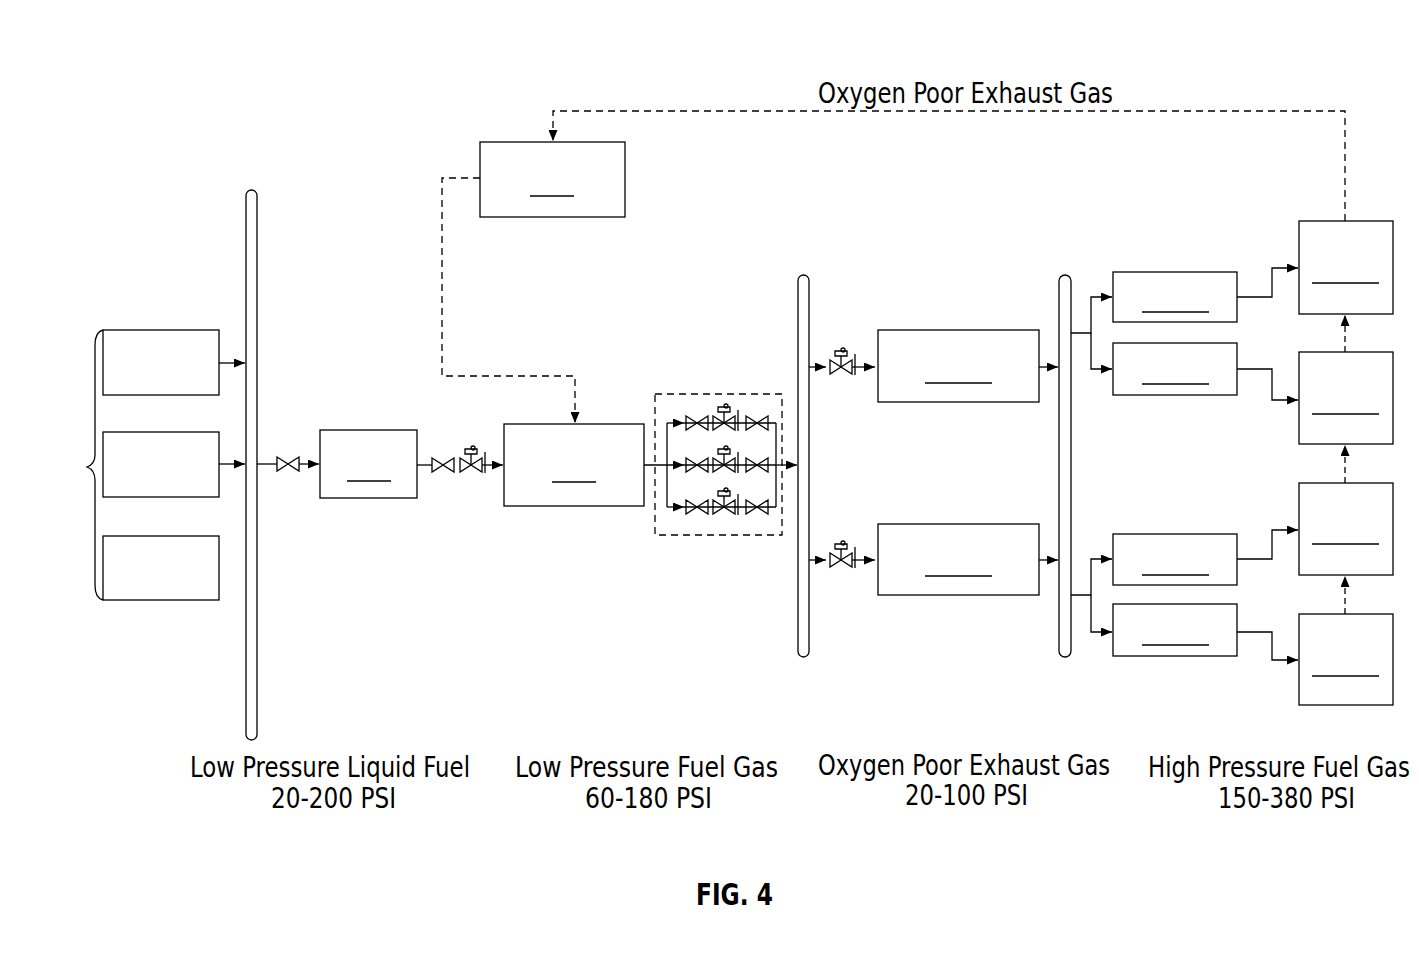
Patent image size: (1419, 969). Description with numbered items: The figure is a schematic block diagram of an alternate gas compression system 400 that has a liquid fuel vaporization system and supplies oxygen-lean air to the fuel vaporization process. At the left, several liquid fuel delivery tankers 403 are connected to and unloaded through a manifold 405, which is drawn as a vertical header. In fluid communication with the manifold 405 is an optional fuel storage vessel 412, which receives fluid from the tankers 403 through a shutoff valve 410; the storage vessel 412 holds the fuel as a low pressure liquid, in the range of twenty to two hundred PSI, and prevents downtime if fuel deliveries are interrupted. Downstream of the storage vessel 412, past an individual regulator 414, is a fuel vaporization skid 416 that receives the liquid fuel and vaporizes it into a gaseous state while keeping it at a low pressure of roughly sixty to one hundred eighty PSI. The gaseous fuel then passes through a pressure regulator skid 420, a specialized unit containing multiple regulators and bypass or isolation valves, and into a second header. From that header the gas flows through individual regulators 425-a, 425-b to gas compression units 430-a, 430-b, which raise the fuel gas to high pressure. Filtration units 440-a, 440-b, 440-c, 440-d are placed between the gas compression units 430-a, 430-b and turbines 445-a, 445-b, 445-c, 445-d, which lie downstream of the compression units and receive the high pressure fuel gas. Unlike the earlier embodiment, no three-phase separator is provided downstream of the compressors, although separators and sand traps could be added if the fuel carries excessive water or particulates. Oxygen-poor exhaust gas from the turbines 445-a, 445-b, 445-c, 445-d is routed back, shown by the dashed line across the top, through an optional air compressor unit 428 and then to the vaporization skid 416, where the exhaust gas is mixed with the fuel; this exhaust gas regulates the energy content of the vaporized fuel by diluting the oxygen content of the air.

The gas compression system 400 is at (152, 72).
The liquid fuel delivery tankers 403 is at (142, 465).
The manifold 405 is at (250, 222).
The shutoff valve 410 is at (282, 472).
The fuel storage vessel 412 is at (368, 464).
The regulator 414 is at (438, 472).
The fuel vaporization skid 416 is at (574, 465).
The pressure regulator skid 420 is at (712, 384).
The regulator 425-a is at (833, 372).
The regulator 425-b is at (833, 565).
The air compressor unit 428 is at (552, 179).
The gas compression unit 430-a is at (968, 366).
The gas compression unit 430-b is at (968, 559).
The filtration unit 440-a is at (1205, 295).
The filtration unit 440-b is at (1205, 371).
The filtration unit 440-c is at (1205, 557).
The filtration unit 440-d is at (1205, 632).
The turbine 445-a is at (1346, 267).
The turbine 445-b is at (1346, 398).
The turbine 445-c is at (1346, 529).
The turbine 445-d is at (1346, 659).